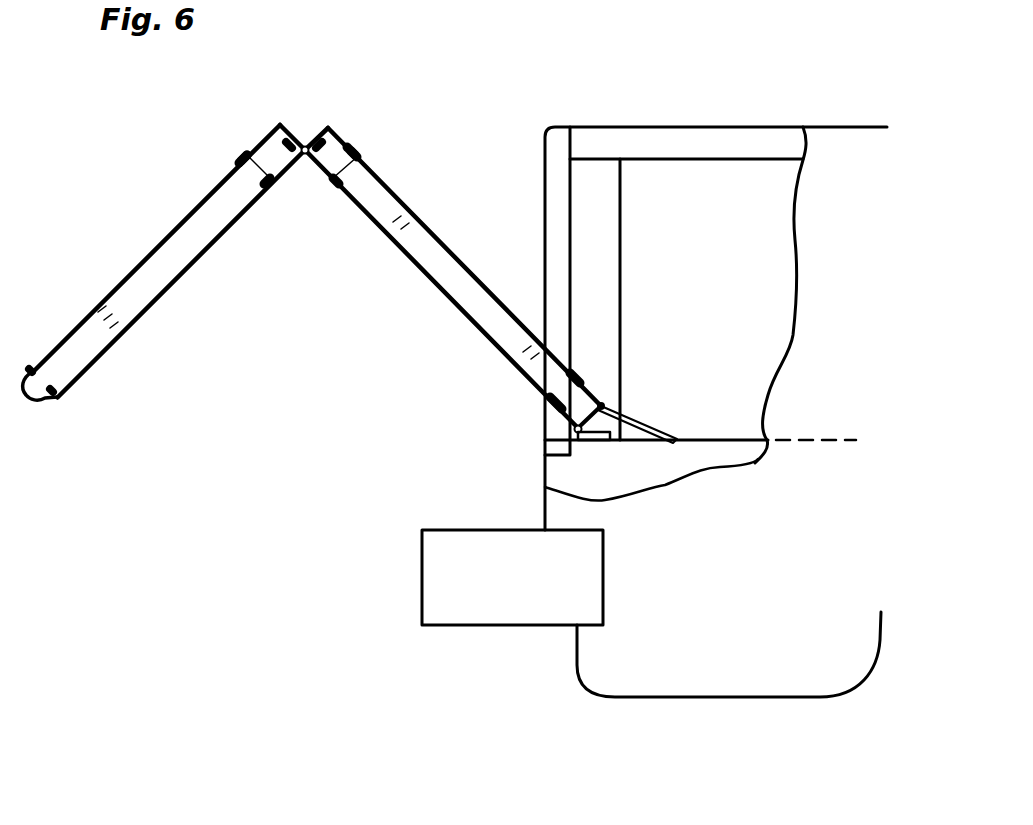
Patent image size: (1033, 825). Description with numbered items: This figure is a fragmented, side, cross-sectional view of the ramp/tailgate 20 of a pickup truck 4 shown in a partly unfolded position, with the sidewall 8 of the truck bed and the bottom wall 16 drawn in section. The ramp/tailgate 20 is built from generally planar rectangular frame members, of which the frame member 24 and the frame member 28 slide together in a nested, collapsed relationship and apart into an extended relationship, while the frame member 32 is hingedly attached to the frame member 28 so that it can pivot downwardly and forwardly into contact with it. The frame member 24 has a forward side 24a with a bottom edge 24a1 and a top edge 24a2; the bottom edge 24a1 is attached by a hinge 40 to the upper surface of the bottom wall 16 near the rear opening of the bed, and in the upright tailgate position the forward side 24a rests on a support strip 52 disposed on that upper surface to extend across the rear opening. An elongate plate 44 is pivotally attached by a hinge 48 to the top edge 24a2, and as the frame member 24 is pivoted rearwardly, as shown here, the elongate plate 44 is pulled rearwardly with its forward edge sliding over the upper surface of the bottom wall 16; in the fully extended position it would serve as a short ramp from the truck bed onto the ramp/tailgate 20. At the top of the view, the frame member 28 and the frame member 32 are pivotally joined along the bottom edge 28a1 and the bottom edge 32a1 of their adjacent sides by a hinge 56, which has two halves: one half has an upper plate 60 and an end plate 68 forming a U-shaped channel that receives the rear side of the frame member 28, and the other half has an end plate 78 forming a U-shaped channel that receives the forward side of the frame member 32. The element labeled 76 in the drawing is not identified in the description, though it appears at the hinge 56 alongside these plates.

The pickup truck 4 is at (562, 110).
The sidewall 8 is at (672, 137).
The bottom wall 16 is at (741, 438).
The ramp/tailgate 20 is at (233, 112).
The frame member 24 is at (448, 304).
The forward side 24a is at (618, 430).
The bottom edge 24a1 is at (577, 428).
The top edge 24a2 is at (602, 404).
The frame member 28 is at (430, 210).
The bottom edge 28a1 is at (316, 160).
The frame member 32 is at (134, 246).
The bottom edge 32a1 is at (290, 160).
The hinge 40 is at (548, 441).
The elongate plate 44 is at (661, 430).
The hinge 48 is at (606, 402).
The support strip 52 is at (593, 441).
The hinge 56 is at (304, 160).
The upper plate 60 is at (343, 136).
The end plate 68 is at (314, 148).
The pivot pin 76 is at (268, 138).
The end plate 78 is at (298, 146).